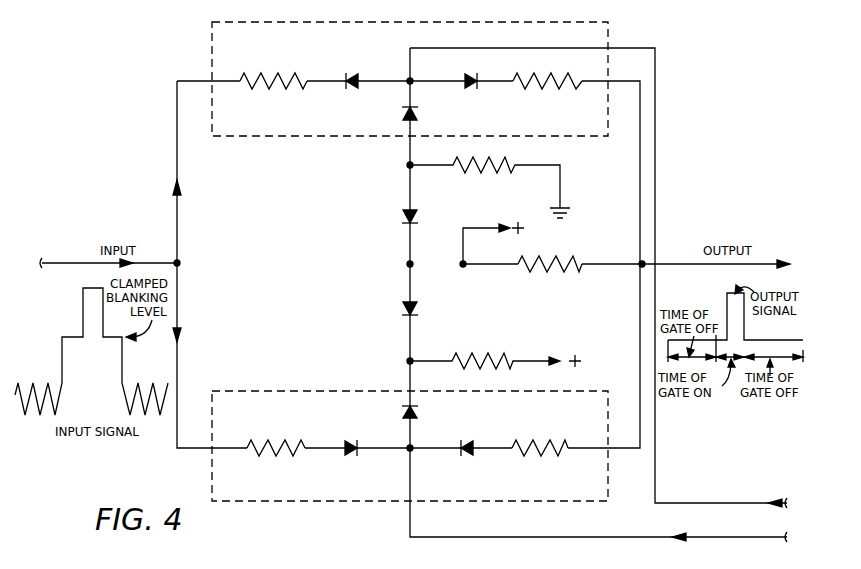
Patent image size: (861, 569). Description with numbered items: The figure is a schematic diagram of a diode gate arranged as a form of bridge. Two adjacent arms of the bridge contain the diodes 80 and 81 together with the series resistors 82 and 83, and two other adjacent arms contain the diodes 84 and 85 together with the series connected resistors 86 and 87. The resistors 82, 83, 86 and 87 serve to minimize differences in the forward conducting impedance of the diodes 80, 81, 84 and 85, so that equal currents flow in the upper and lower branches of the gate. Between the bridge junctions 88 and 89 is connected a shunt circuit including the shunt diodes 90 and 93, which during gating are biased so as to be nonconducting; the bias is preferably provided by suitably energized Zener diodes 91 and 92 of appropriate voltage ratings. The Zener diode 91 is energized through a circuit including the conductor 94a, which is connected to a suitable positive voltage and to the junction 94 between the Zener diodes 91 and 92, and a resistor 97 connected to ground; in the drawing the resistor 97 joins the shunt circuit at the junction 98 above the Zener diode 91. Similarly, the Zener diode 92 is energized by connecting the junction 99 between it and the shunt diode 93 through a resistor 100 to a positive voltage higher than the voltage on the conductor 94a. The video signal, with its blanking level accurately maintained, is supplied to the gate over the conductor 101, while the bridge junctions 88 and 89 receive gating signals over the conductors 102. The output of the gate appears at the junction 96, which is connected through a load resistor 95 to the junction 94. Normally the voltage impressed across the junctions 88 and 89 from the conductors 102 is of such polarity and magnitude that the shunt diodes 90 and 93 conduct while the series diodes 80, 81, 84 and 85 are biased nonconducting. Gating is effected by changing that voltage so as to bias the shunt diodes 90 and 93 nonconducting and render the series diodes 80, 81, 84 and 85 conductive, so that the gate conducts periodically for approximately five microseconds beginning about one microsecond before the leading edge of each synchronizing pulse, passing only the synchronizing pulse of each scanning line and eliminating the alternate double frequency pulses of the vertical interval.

The diode 80 is at (359, 76).
The diode 81 is at (467, 74).
The series resistor 82 is at (289, 66).
The series resistor 83 is at (554, 85).
The diode 84 is at (354, 456).
The diode 85 is at (473, 457).
The series connected resistor 86 is at (276, 441).
The series connected resistor 87 is at (552, 446).
The bridge junction 88 is at (406, 85).
The bridge junction 89 is at (423, 462).
The shunt diode 90 is at (418, 115).
The Zener diode 91 is at (403, 217).
The Zener diode 92 is at (403, 309).
The shunt diode 93 is at (404, 407).
The junction 94 is at (406, 264).
The conductor 94a is at (476, 233).
The load resistor 95 is at (561, 273).
The junction 96 is at (640, 269).
The resistor 97 is at (496, 172).
The junction 98 is at (406, 165).
The junction 99 is at (406, 361).
The resistor 100 is at (495, 352).
The conductor 101 is at (92, 259).
The conductors 102 is at (751, 504).